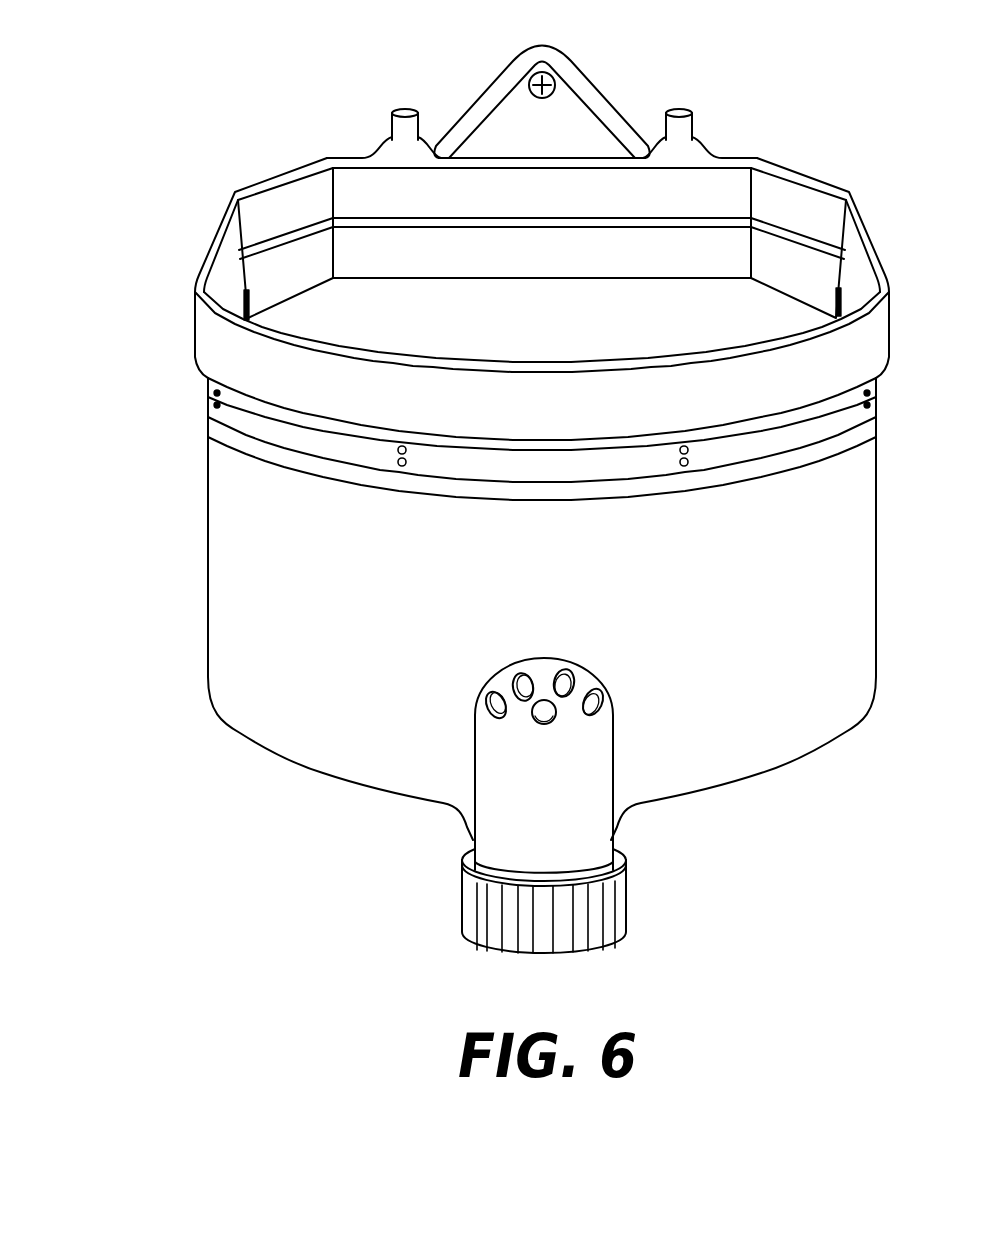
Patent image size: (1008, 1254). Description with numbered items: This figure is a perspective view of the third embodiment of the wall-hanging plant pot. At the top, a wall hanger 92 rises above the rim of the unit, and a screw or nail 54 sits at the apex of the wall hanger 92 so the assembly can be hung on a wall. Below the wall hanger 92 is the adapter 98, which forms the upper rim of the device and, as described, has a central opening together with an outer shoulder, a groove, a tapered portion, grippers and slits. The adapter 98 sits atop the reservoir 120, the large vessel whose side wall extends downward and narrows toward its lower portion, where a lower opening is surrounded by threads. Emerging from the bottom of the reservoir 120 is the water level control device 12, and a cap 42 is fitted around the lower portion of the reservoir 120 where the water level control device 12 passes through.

The adapter 98 is at (168, 340).
The wall hanger 92 is at (472, 83).
The screw or nail 54 is at (554, 77).
The reservoir 120 is at (172, 555).
The water level control device 12 is at (570, 787).
The cap 42 is at (445, 905).